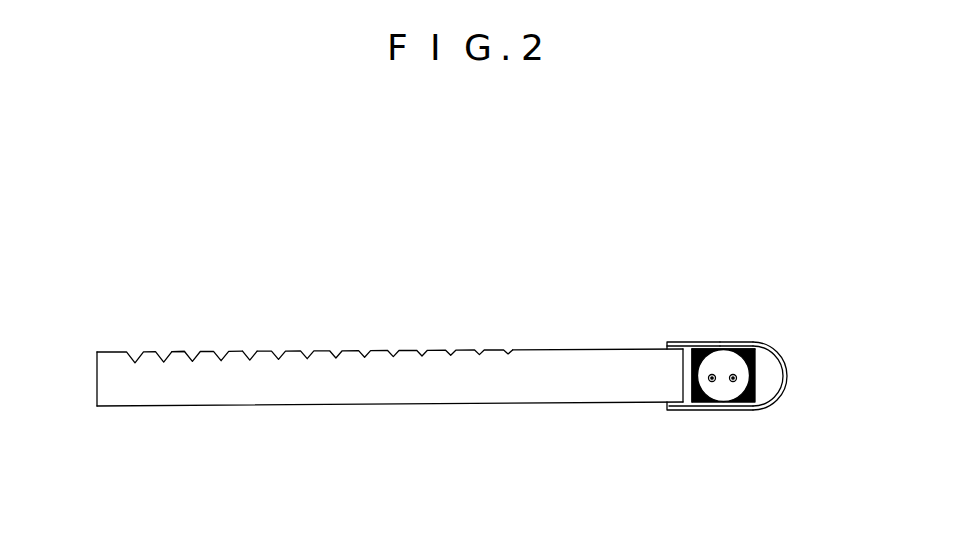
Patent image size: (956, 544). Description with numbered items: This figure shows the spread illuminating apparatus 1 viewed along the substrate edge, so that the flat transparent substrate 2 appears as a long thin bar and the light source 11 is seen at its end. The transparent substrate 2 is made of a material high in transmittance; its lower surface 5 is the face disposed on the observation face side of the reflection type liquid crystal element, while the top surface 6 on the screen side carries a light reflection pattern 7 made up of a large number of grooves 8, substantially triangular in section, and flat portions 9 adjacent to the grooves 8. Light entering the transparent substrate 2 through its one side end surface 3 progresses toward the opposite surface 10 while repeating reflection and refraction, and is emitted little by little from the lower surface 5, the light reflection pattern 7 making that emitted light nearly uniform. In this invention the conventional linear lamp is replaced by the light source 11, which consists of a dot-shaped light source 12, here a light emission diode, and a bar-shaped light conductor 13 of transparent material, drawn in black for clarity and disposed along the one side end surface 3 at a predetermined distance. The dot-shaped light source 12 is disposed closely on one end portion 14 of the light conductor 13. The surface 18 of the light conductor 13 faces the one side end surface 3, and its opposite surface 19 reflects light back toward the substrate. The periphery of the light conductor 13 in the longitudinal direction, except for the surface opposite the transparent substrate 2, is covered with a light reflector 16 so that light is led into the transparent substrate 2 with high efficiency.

The spread illuminating apparatus 1 is at (498, 288).
The transparent substrate 2 is at (380, 328).
The one side end surface 3 is at (681, 365).
The lower surface 5 is at (185, 407).
The top surface 6 is at (436, 350).
The light reflection pattern 7 is at (305, 263).
The grooves 8 is at (245, 350).
The flat portions 9 is at (178, 350).
The opposite surface 10 is at (97, 374).
The light source 11 is at (710, 366).
The dot-shaped light source 12 is at (755, 452).
The light conductor 13 is at (752, 400).
The one end portion 14 is at (700, 349).
The light reflector 16 is at (788, 396).
The surface 18 is at (684, 379).
The opposite surface 19 is at (770, 343).